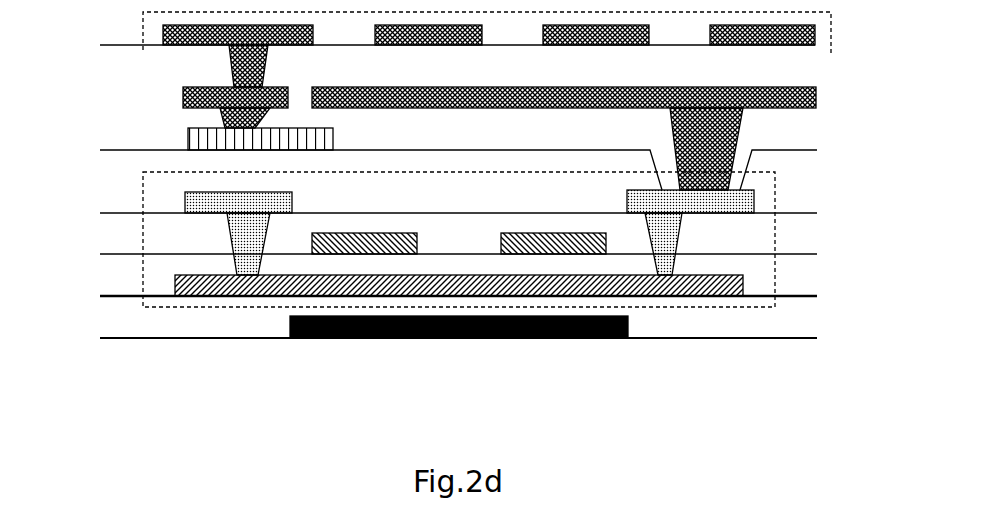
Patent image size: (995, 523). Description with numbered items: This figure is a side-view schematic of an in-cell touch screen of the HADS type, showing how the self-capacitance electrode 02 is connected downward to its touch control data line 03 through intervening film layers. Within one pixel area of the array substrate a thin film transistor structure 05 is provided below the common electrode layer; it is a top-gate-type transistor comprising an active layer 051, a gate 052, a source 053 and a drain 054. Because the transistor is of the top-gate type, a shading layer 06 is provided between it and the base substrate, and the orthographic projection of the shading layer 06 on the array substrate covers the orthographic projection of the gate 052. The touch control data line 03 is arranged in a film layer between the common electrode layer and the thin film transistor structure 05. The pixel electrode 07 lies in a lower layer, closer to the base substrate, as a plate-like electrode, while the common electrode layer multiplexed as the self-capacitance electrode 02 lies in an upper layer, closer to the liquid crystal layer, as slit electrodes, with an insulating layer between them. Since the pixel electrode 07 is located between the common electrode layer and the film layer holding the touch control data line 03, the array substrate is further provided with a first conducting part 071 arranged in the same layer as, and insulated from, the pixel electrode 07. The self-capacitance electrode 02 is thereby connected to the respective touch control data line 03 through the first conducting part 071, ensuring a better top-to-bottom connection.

The self-capacitance electrode 02 is at (143, 33).
The first conducting part 071 is at (183, 97).
The pixel electrode 07 is at (818, 95).
The touch control data line 03 is at (188, 137).
The thin film transistor structure 05 is at (774, 194).
The drain 054 is at (738, 213).
The source 053 is at (203, 213).
The gate 052 is at (320, 254).
The active layer 051 is at (658, 296).
The shading layer 06 is at (487, 338).